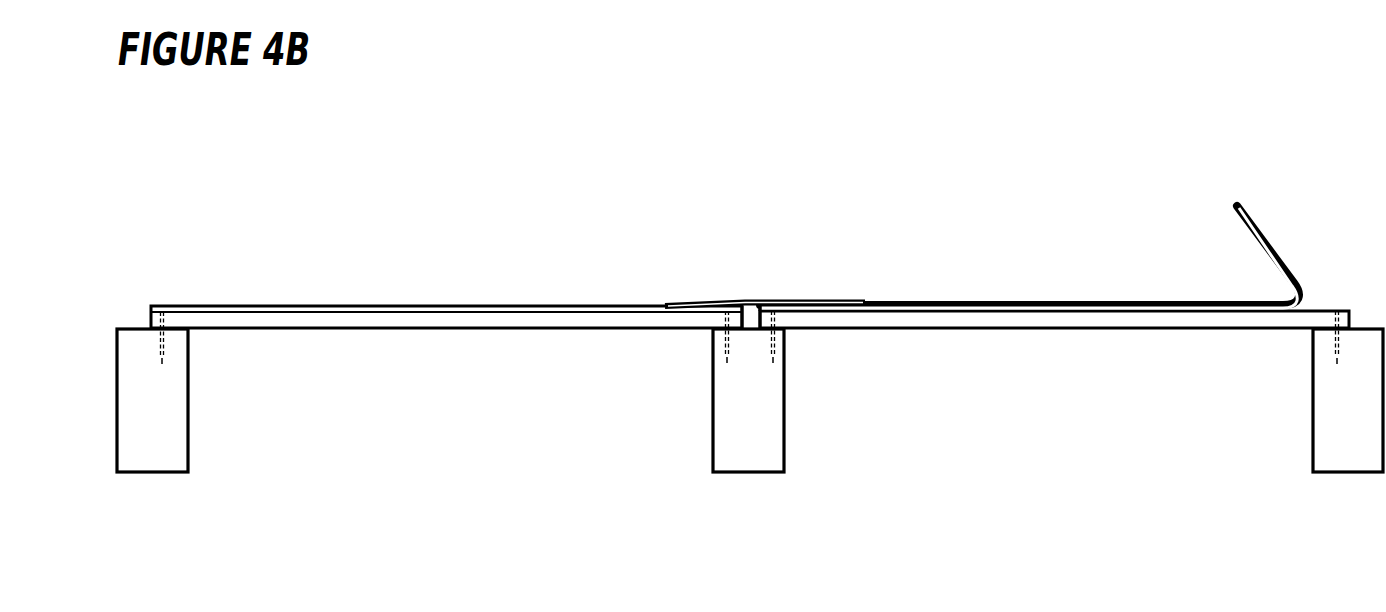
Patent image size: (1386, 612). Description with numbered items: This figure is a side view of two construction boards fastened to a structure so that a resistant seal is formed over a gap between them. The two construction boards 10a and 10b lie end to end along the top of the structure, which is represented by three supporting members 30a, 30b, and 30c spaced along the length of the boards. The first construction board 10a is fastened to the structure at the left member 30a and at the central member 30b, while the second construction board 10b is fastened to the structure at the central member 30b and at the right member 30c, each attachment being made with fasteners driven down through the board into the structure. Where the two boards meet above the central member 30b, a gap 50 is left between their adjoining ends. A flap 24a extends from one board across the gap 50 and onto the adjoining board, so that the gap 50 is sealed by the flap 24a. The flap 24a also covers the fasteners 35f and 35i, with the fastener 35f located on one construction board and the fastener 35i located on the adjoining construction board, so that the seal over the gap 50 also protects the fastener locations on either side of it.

The construction board 10a is at (395, 265).
The construction board 10b is at (1115, 265).
The flap 24a is at (833, 300).
The structure 30a is at (152, 473).
The structure 30b is at (747, 473).
The structure 30c is at (1347, 473).
The fastener 35f is at (724, 338).
The fastener 35i is at (777, 339).
The gap 50 is at (753, 343).